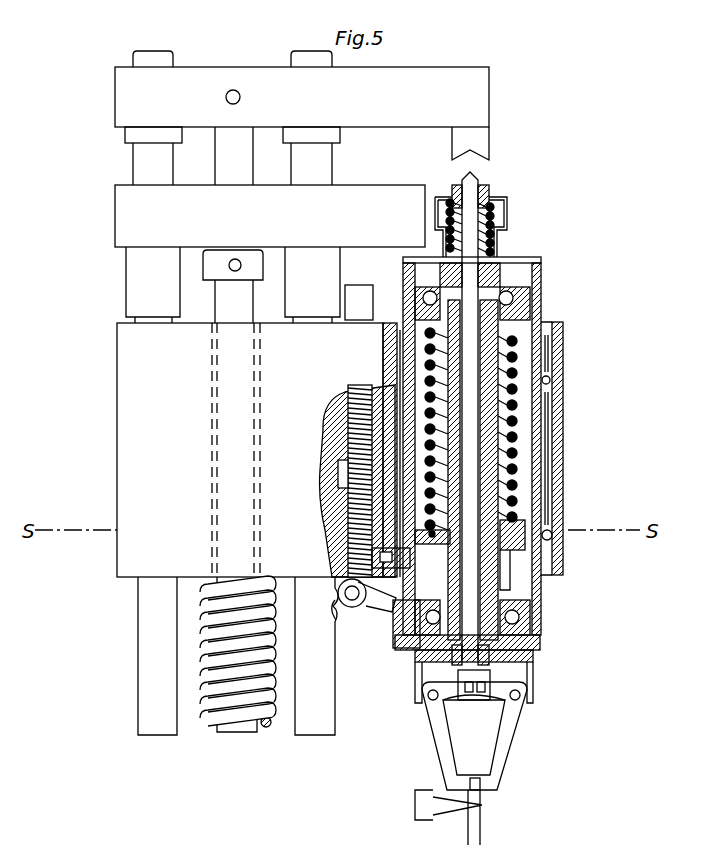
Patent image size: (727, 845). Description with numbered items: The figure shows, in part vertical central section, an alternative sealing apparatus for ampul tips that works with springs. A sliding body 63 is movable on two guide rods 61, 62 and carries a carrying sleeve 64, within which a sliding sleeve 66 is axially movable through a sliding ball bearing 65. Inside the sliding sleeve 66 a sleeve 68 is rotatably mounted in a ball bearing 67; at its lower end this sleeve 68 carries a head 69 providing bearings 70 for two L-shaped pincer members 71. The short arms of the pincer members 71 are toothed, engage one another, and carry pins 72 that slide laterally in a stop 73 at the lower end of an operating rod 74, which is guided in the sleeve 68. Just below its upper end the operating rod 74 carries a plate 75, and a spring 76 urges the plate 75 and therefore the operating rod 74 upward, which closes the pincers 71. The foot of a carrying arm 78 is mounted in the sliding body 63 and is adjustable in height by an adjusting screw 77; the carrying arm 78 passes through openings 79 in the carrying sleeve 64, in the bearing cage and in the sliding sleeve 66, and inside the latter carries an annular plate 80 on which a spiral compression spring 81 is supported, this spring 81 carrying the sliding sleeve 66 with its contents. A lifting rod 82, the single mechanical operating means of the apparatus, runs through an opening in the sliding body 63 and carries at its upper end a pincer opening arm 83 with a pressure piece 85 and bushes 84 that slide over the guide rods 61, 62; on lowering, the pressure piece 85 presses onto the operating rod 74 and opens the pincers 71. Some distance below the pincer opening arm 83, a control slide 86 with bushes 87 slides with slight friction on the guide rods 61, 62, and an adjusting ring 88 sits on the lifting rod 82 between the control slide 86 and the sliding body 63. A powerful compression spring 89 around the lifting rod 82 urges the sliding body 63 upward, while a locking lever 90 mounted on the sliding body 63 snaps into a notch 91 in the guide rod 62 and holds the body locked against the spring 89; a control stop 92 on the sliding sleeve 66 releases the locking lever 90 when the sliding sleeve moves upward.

The guide rod 61 is at (140, 712).
The guide rod 62 is at (335, 726).
The sliding body 63 is at (125, 578).
The carrying sleeve 64 is at (385, 338).
The sliding ball bearing 65 is at (549, 530).
The sliding sleeve 66 is at (408, 270).
The ball bearing 67 is at (520, 297).
The sleeve 68 is at (505, 272).
The head 69 is at (535, 665).
The bearing 70 is at (520, 698).
The pincer member 71 is at (520, 752).
The pin 72 is at (467, 701).
The stop 73 is at (486, 701).
The operating rod 74 is at (478, 178).
The plate 75 is at (490, 199).
The spring 76 is at (497, 226).
The adjusting screw 77 is at (357, 290).
The carrying arm 78 is at (372, 556).
The opening 79 is at (345, 497).
The annular plate 80 is at (510, 560).
The spiral compression spring 81 is at (520, 440).
The lifting rod 82 is at (247, 163).
The pincer opening arm 83 is at (410, 118).
The bush 84 is at (125, 137).
The pressure piece 85 is at (483, 133).
The control slide 86 is at (388, 192).
The bush 87 is at (294, 288).
The adjusting ring 88 is at (212, 281).
The compression spring 89 is at (205, 718).
The locking lever 90 is at (372, 608).
The notch 91 is at (333, 618).
The control stop 92 is at (395, 650).